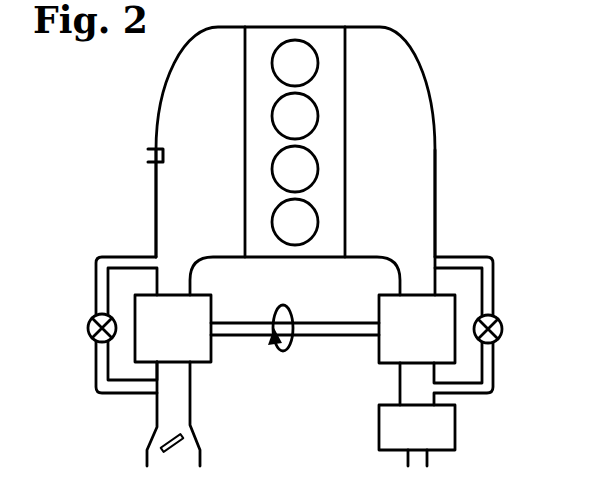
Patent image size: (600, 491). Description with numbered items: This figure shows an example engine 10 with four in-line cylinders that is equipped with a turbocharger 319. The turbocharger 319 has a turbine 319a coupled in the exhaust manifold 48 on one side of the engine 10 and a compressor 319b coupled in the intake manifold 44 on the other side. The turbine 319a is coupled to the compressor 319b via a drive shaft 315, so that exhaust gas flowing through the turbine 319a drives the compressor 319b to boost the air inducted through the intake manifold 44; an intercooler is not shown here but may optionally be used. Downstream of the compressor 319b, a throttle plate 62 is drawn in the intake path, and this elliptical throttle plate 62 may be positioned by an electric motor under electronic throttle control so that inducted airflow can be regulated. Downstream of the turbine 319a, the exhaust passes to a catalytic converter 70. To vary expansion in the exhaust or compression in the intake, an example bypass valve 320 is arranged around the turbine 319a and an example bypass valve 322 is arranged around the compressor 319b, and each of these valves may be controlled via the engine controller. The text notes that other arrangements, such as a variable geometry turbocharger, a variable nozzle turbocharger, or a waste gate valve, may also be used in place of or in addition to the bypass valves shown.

The engine 10 is at (308, 27).
The intake manifold 44 is at (216, 129).
The exhaust manifold 48 is at (401, 129).
The throttle plate 62 is at (168, 438).
The catalytic converter 70 is at (431, 441).
The drive shaft 315 is at (310, 323).
The turbocharger 319 is at (295, 350).
The turbine 319a is at (447, 342).
The compressor 319b is at (200, 342).
The bypass valve 320 is at (502, 330).
The bypass valve 322 is at (88, 330).